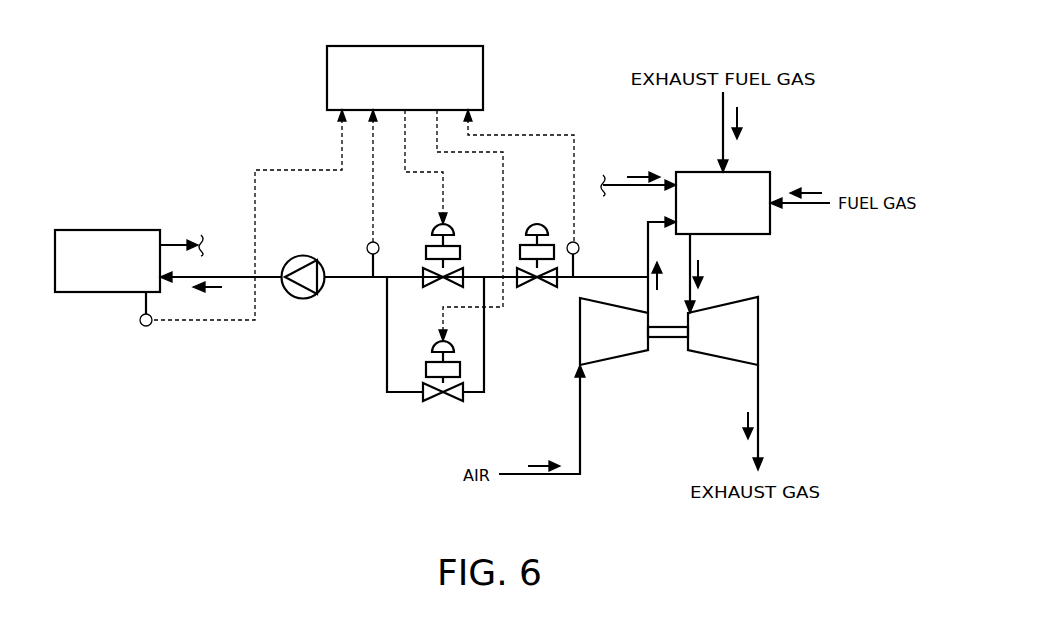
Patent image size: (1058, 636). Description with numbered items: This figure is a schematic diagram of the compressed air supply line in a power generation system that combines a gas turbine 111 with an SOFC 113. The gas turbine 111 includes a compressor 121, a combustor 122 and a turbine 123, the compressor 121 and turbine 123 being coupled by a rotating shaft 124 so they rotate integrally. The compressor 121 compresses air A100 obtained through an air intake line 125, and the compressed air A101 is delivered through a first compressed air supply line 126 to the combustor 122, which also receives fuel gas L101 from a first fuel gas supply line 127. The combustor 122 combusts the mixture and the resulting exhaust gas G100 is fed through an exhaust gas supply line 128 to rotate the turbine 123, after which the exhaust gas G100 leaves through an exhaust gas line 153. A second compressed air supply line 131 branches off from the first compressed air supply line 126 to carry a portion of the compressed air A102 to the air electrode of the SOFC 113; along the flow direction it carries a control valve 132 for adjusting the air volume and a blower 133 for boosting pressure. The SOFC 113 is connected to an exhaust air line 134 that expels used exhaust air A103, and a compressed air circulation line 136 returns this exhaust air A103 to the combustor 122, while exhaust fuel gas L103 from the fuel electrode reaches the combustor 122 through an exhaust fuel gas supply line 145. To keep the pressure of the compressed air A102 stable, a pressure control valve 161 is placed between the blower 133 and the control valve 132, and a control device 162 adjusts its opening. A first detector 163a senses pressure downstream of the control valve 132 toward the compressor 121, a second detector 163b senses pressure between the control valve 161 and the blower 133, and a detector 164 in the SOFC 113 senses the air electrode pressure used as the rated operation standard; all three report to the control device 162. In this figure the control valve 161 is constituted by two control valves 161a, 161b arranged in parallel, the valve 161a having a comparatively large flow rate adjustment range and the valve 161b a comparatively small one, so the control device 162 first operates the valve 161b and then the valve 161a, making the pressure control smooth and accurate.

The control device 162 is at (410, 46).
The SOFC 113 is at (113, 230).
The exhaust air line 134 is at (195, 244).
The second compressed air supply line 131 is at (568, 279).
The blower 133 is at (303, 255).
The detector 164 is at (146, 326).
The compressed air A102 is at (205, 292).
The second detector 163b is at (378, 244).
The control valve 161a is at (447, 224).
The control valve 161 is at (471, 254).
The control valve 161b is at (439, 346).
The control valve 132 is at (537, 223).
The first detector 163a is at (580, 244).
The combustor 122 is at (743, 171).
The exhaust fuel gas supply line 145 is at (723, 113).
The exhaust fuel gas L103 is at (739, 120).
The first fuel gas supply line 127 is at (795, 208).
The fuel gas L101 is at (799, 192).
The exhaust air A103 is at (635, 172).
The compressed air circulation line 136 is at (632, 190).
The first compressed air supply line 126 is at (648, 263).
The compressed air A101 is at (654, 287).
The exhaust gas supply line 128 is at (697, 252).
The exhaust gas G100 is at (702, 276).
The gas turbine 111 is at (687, 339).
The compressor 121 is at (580, 345).
The rotating shaft 124 is at (668, 338).
The turbine 123 is at (723, 359).
The exhaust gas line 153 is at (762, 449).
The air intake line 125 is at (582, 447).
The air A100 is at (540, 462).